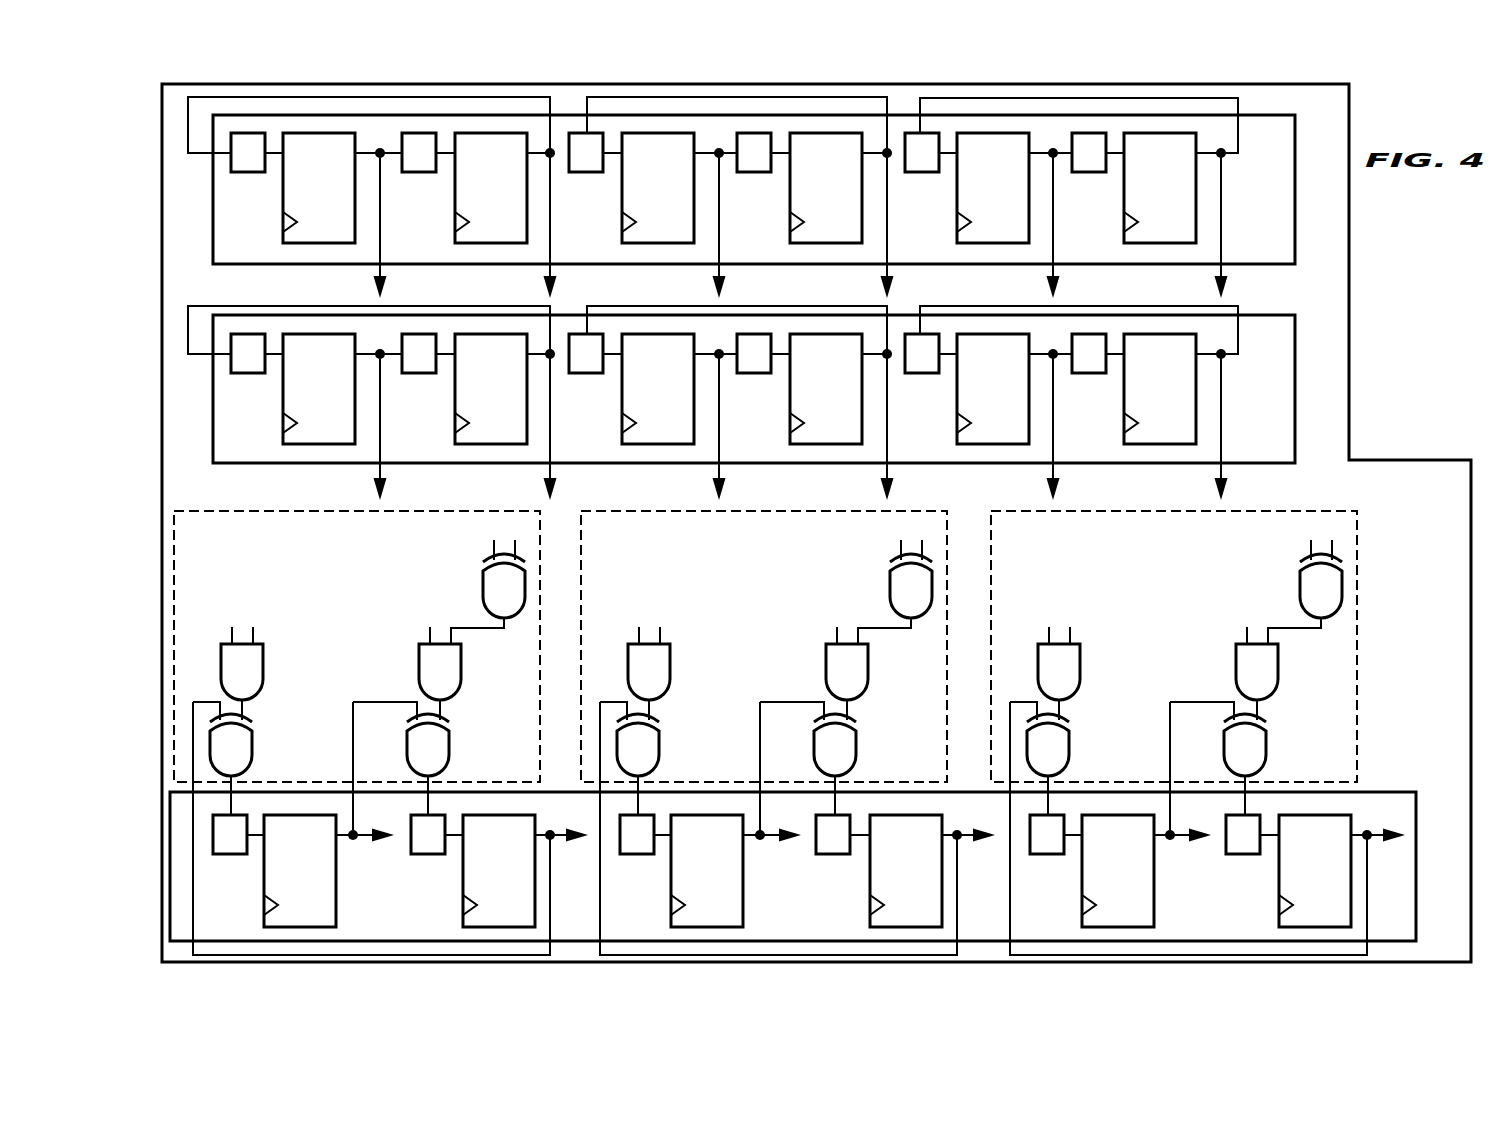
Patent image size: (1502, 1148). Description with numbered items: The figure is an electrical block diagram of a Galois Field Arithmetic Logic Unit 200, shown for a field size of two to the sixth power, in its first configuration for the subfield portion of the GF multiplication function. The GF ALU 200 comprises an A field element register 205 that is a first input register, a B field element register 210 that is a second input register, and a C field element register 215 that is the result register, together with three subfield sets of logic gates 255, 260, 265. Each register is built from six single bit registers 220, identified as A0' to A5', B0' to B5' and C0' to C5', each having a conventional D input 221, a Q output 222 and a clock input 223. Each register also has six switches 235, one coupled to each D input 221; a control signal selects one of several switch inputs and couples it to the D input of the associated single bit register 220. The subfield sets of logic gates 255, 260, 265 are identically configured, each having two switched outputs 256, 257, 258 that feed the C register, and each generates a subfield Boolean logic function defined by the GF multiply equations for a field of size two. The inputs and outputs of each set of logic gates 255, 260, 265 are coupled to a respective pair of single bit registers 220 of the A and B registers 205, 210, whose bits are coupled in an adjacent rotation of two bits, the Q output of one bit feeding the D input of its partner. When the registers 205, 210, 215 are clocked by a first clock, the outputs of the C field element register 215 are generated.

The Galois Field Arithmetic Logic Unit 200 is at (1350, 278).
The A field element register 205 is at (1296, 205).
The B field element register 210 is at (1296, 405).
The C field element register 215 is at (1383, 792).
The single bit register 220 is at (291, 366).
The D input 221 is at (278, 353).
The Q output 222 is at (360, 355).
The clock input 223 is at (283, 423).
The switch 235 is at (259, 374).
The subfield set of logic gates 255 is at (443, 510).
The subfield set of logic gates 260 is at (753, 510).
The subfield set of logic gates 265 is at (1293, 512).
The switched outputs 256 is at (234, 787).
The switched outputs 257 is at (641, 787).
The switched outputs 258 is at (1051, 788).